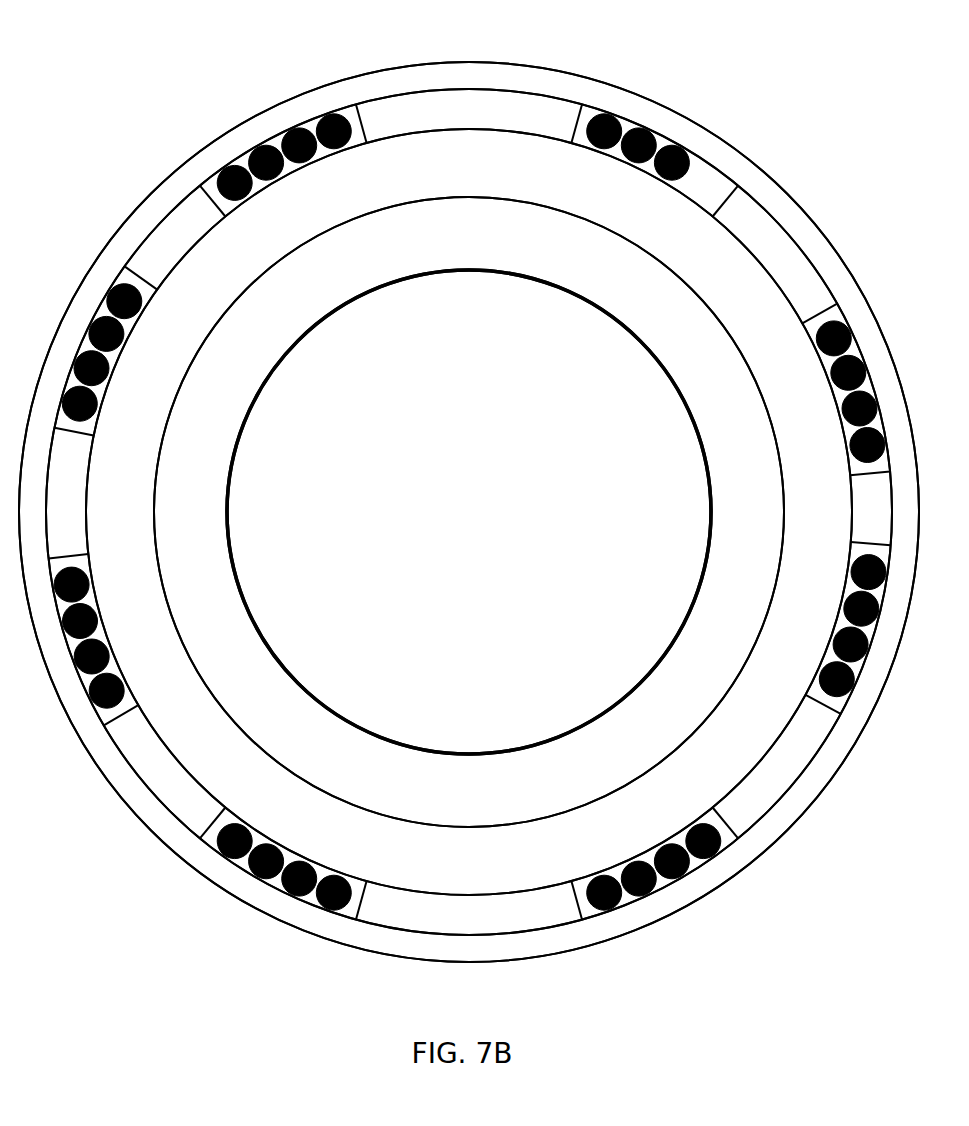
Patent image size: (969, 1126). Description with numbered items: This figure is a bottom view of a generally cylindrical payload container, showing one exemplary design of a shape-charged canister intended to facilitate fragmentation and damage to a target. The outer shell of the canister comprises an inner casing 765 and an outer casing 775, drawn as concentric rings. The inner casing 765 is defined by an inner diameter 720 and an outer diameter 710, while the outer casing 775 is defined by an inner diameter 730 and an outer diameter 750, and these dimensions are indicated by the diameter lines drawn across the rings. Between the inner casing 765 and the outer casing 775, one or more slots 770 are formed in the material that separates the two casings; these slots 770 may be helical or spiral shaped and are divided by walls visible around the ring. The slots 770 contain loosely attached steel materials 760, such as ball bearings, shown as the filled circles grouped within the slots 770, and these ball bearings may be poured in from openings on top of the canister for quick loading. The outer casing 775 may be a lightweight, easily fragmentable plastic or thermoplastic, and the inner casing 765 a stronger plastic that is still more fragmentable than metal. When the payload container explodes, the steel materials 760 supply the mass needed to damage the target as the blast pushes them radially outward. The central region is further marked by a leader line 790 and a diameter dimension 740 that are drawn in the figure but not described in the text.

The outer diameter 710 is at (647, 840).
The inner diameter 720 is at (190, 642).
The inner diameter 730 is at (891, 520).
The inner bore diameter 740 is at (357, 724).
The outer diameter 750 is at (14, 600).
The loosely attached steel materials 760 is at (698, 160).
The inner casing 765 is at (193, 283).
The slots 770 is at (213, 832).
The outer casing 775 is at (82, 302).
The inner bore 790 is at (622, 603).